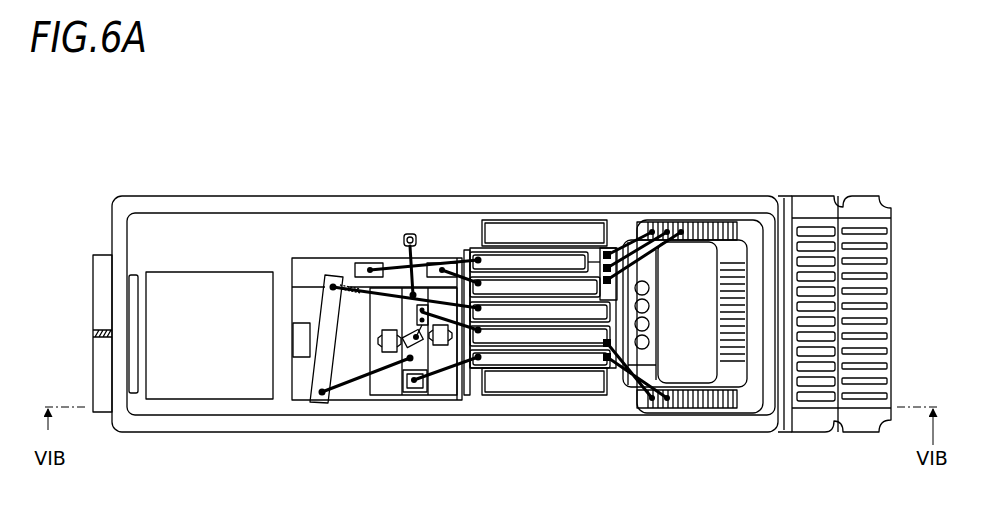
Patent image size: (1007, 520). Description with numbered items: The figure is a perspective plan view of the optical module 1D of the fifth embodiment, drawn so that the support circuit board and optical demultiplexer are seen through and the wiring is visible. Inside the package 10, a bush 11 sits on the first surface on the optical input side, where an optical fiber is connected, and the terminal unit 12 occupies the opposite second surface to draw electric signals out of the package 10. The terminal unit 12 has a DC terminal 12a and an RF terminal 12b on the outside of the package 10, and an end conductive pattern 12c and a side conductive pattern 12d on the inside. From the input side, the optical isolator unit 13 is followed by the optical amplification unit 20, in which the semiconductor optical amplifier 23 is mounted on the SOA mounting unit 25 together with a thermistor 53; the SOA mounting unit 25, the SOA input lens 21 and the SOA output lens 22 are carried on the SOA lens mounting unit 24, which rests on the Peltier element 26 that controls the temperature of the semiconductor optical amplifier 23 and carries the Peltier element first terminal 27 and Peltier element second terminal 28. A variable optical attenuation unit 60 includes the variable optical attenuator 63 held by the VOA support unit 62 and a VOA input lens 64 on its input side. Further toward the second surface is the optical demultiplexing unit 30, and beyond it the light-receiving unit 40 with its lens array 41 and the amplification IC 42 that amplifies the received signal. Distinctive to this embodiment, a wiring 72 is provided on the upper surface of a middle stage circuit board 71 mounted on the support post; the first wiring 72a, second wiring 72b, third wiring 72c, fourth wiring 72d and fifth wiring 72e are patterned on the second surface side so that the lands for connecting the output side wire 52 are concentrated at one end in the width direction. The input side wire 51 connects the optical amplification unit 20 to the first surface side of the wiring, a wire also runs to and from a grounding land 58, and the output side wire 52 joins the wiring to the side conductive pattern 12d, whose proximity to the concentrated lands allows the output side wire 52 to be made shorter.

The optical module 1D is at (228, 158).
The package 10 is at (148, 424).
The bush 11 is at (103, 290).
The terminal unit 12 is at (826, 206).
The DC terminal 12a is at (812, 420).
The RF terminal 12b is at (860, 420).
The end conductive pattern 12c is at (738, 393).
The side conductive pattern 12d is at (684, 406).
The optical isolator unit 13 is at (208, 373).
The optical amplification unit 20 is at (424, 247).
The SOA input lens 21 is at (388, 378).
The SOA output lens 22 is at (420, 392).
The semiconductor optical amplifier 23 is at (442, 347).
The SOA lens mounting unit 24 is at (410, 348).
The SOA mounting unit 25 is at (388, 289).
The Peltier element 26 is at (327, 268).
The Peltier element first terminal 27 is at (361, 258).
The Peltier element second terminal 28 is at (440, 263).
The optical demultiplexing unit 30 is at (513, 214).
The light-receiving unit 40 is at (696, 256).
The lens array 41 is at (664, 272).
The amplification IC 42 is at (709, 262).
The input side wire 51 is at (466, 255).
The output side wire 52 is at (627, 270).
The thermistor 53 is at (390, 354).
The grounding land 58 is at (408, 233).
The variable optical attenuation unit 60 is at (308, 253).
The VOA support unit 62 is at (323, 404).
The variable optical attenuator 63 is at (344, 380).
The VOA input lens 64 is at (301, 357).
The middle stage circuit board 71 is at (492, 250).
The wiring 72 is at (510, 356).
The first wiring 72a is at (536, 372).
The second wiring 72b is at (562, 333).
The third wiring 72c is at (593, 306).
The fourth wiring 72d is at (540, 275).
The fifth wiring 72e is at (572, 263).